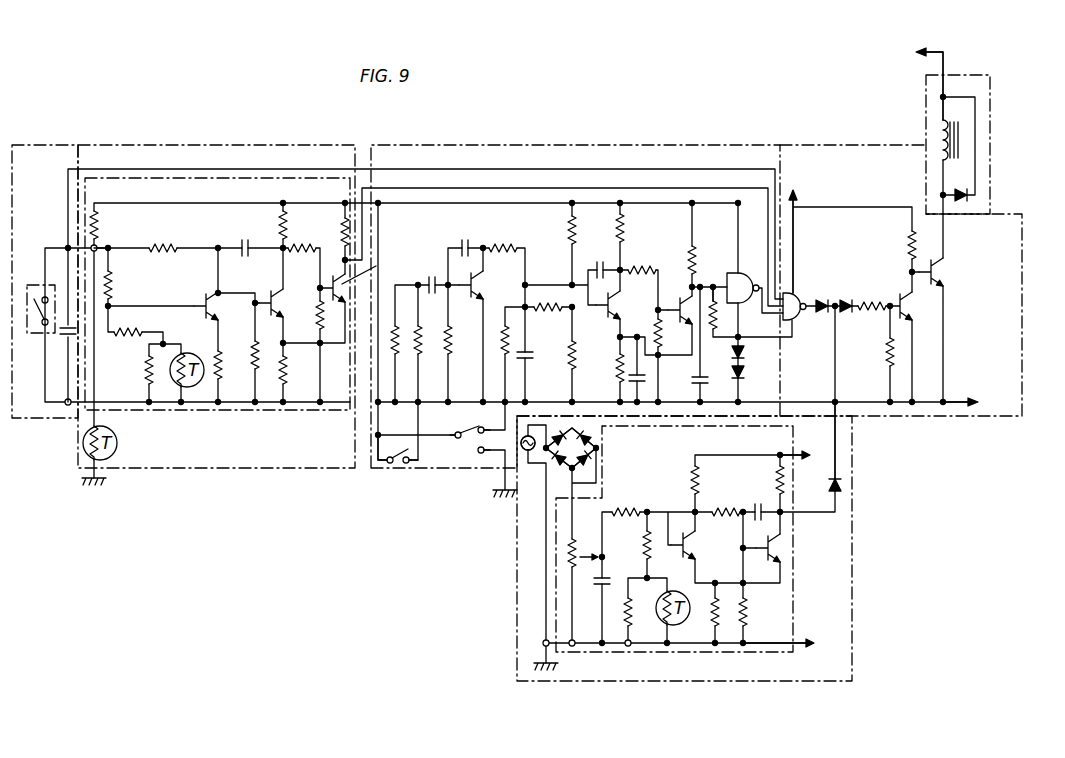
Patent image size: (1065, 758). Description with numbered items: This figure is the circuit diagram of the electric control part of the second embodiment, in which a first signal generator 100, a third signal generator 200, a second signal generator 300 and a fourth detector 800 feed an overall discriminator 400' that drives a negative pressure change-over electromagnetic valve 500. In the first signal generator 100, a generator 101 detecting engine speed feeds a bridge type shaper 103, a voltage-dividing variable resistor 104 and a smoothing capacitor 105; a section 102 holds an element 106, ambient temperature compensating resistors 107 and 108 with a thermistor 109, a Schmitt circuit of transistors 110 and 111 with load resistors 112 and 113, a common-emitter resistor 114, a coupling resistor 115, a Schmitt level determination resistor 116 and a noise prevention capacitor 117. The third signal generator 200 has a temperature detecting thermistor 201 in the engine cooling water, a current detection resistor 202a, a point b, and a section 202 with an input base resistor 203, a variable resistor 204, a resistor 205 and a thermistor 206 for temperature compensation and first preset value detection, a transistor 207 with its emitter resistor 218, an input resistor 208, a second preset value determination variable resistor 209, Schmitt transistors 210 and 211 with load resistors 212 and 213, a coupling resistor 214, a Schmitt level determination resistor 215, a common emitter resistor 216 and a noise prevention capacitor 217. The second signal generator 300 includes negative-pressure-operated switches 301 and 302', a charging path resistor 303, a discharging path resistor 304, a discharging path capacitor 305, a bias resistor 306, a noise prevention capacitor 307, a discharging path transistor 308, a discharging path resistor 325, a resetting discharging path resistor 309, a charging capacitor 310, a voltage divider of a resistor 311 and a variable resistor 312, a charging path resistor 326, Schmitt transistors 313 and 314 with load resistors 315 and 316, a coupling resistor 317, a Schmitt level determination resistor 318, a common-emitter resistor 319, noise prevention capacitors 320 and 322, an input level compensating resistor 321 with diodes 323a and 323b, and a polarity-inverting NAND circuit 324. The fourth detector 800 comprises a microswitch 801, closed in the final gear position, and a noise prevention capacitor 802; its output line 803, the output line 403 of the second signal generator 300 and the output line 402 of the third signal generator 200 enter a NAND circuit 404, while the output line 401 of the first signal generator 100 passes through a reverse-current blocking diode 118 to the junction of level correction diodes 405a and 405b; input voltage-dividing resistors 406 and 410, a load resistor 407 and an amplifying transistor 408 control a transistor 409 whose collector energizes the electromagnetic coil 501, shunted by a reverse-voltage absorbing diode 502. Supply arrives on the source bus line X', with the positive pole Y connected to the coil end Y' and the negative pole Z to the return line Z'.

The first signal generator 100 is at (514, 660).
The generator 101 is at (526, 452).
The amplifier circuit block 102 is at (702, 652).
The bridge type shaper 103 is at (598, 444).
The voltage-dividing variable resistor 104 is at (566, 556).
The smoothing capacitor 105 is at (596, 588).
The resistor 106 is at (626, 509).
The resistor 107 is at (644, 546).
The resistor 108 is at (628, 627).
The thermistor 109 is at (678, 626).
The transistor 110 is at (694, 550).
The transistor 111 is at (782, 549).
The load resistor 112 is at (690, 474).
The load resistor 113 is at (786, 482).
The common-emitter resistor 114 is at (712, 615).
The coupling resistor 115 is at (722, 508).
The Schmitt level determination resistor 116 is at (746, 615).
The noise prevention capacitor 117 is at (757, 504).
The reverse-current blocking diode 118 is at (841, 488).
The third signal generator 200 is at (290, 143).
The temperature detecting thermistor 201 is at (118, 446).
The bridge circuit block 202 is at (332, 410).
The current detection resistor 202a is at (98, 222).
The input base resistor 203 is at (111, 285).
The variable resistor 204 is at (126, 335).
The resistor 205 is at (146, 372).
The thermistor 206 is at (200, 387).
The transistor 207 is at (203, 306).
The input resistor 208 is at (160, 246).
The second preset value determination variable resistor 209 is at (257, 378).
The transistor 210 is at (277, 306).
The transistor 211 is at (367, 279).
The load resistor 212 is at (300, 191).
The load resistor 213 is at (344, 215).
The coupling resistor 214 is at (330, 232).
The Schmitt level determination resistor 215 is at (325, 330).
The common emitter resistor 216 is at (287, 381).
The noise prevention capacitor 217 is at (249, 232).
The emitter resistor 218 is at (223, 362).
The second signal generator 300 is at (596, 143).
The switch 301 is at (396, 464).
The switch 302' is at (460, 465).
The charging path resistor 303 is at (420, 398).
The discharging path resistor 304 is at (395, 398).
The discharging path capacitor 305 is at (430, 278).
The bias resistor 306 is at (452, 352).
The noise prevention capacitor 307 is at (463, 246).
The discharging path transistor 308 is at (478, 290).
The resetting discharging path resistor 309 is at (512, 342).
The charging capacitor 310 is at (534, 360).
The resistor 311 is at (568, 239).
The variable resistor 312 is at (575, 355).
The transistor 313 is at (612, 317).
The transistor 314 is at (672, 304).
The load resistor 315 is at (616, 226).
The load resistor 316 is at (688, 255).
The coupling resistor 317 is at (634, 266).
The Schmitt level determination resistor 318 is at (670, 345).
The common-emitter resistor 319 is at (612, 372).
The noise prevention capacitor 320 is at (600, 266).
The resistor 321 is at (711, 332).
The noise prevention capacitor 322 is at (714, 390).
The diode 323a is at (748, 352).
The diode 323b is at (748, 375).
The NAND circuit 324 is at (726, 281).
The discharging path resistor 325 is at (501, 245).
The charging path resistor 326 is at (547, 302).
The overall discriminator 400' is at (901, 300).
The output line 401 is at (840, 452).
The output line 402 is at (494, 189).
The output line 403 is at (758, 297).
The NAND circuit 404 is at (826, 290).
The level correction diode 405a is at (822, 311).
The level correction diode 405b is at (847, 299).
The input voltage-dividing resistor 406 is at (869, 302).
The load resistor 407 is at (906, 242).
The amplifying transistor 408 is at (914, 310).
The transistor 409 is at (936, 271).
The input voltage-dividing resistor 410 is at (887, 350).
The negative pressure change-over electromagnetic valve 500 is at (993, 88).
The electromagnetic coil 501 is at (940, 140).
The reverse-voltage absorbing diode 502 is at (970, 196).
The fourth detector 800 is at (104, 142).
The microswitch 801 is at (38, 290).
The noise prevention capacitor 802 is at (62, 345).
The output line 803 is at (68, 186).
The node b is at (102, 248).
The source bus line X' is at (790, 230).
The end of electromagnetic coil Y' is at (919, 82).
The return line Z' is at (970, 409).
The positive pole Y is at (799, 443).
The negative pole Z is at (788, 645).